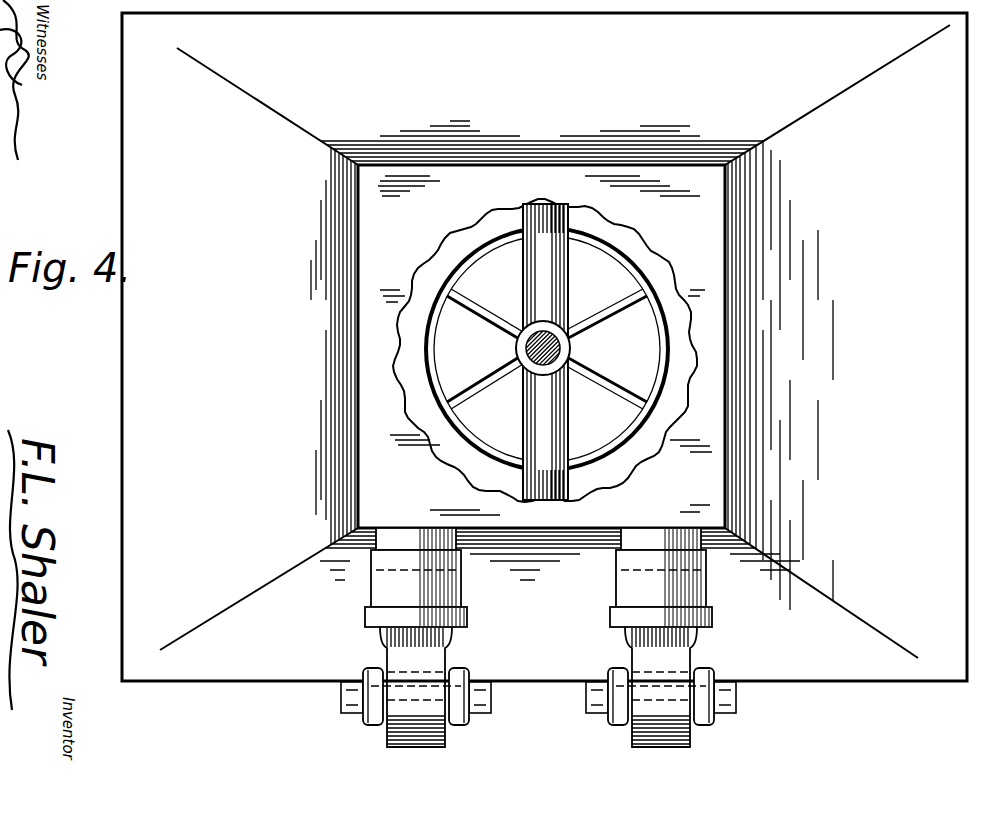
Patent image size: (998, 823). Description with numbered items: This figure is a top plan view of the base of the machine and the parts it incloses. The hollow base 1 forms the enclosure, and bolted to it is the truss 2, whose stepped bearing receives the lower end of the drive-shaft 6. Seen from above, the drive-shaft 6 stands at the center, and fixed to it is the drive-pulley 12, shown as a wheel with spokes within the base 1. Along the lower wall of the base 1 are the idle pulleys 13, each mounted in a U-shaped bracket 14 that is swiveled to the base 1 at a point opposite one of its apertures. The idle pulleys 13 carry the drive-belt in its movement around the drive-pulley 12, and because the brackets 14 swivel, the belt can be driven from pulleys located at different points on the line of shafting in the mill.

The hollow base 1 is at (544, 347).
The truss 2 is at (562, 278).
The drive-shaft 6 is at (527, 344).
The drive-pulley 12 is at (460, 272).
The idle pulleys 13 is at (538, 637).
The U-shaped brackets 14 is at (727, 643).